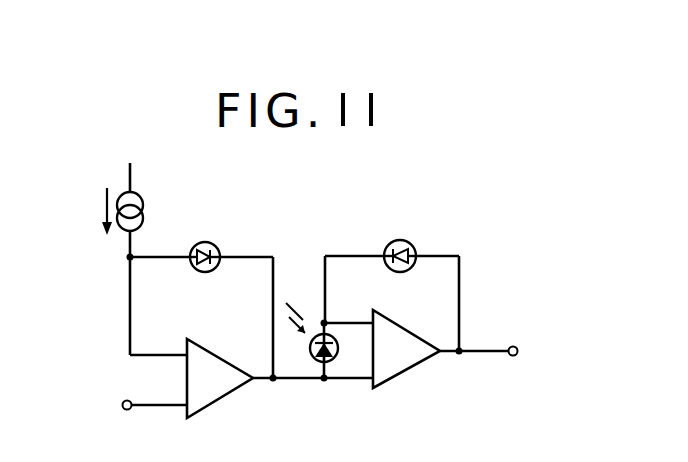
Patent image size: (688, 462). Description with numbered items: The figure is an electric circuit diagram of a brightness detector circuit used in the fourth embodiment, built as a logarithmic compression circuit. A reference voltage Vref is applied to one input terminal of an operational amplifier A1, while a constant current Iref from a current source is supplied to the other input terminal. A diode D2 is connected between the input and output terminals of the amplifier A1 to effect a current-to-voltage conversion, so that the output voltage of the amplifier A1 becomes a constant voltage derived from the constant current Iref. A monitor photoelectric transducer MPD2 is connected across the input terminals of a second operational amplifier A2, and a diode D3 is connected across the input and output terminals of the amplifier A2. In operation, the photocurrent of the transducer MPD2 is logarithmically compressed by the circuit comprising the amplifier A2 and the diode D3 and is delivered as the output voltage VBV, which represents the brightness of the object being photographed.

The constant current Iref is at (94, 211).
The diode D2 is at (203, 242).
The diode D3 is at (402, 246).
The operational amplifier A1 is at (213, 393).
The operational amplifier A2 is at (395, 330).
The monitor photoelectric transducer MPD2 is at (337, 352).
The reference voltage Vref is at (96, 404).
The output voltage VBV is at (538, 351).